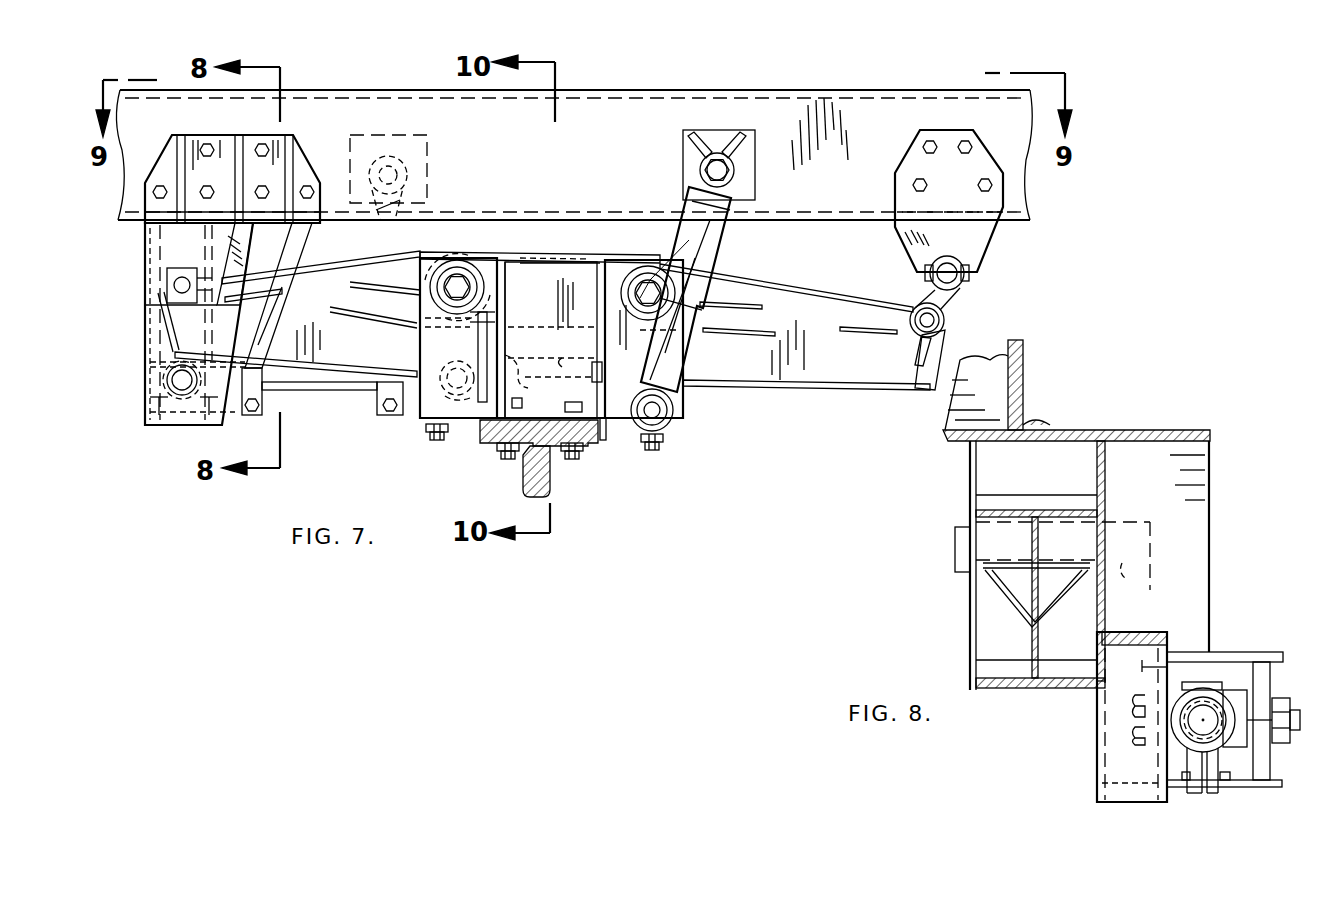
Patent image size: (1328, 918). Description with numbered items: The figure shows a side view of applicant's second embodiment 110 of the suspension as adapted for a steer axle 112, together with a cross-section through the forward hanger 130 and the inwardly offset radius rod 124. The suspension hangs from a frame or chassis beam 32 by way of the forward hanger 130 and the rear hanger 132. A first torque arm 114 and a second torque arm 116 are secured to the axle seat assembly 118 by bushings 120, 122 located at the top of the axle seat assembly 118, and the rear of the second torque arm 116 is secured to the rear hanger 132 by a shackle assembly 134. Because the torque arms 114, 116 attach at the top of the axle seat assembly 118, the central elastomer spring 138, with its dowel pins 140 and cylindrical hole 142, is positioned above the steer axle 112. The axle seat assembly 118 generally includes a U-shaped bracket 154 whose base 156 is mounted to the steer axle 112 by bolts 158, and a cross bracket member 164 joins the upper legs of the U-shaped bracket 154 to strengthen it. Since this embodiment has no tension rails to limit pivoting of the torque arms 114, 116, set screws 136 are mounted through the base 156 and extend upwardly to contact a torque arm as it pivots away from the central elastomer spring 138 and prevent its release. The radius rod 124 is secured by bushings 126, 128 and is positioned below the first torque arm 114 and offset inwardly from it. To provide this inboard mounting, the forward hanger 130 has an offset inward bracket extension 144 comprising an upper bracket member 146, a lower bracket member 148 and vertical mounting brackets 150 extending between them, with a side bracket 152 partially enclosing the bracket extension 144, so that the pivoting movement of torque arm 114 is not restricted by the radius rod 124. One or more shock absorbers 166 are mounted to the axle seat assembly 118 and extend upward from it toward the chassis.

In FIG. 7, the frame beam 32 is at (840, 100).
In FIG. 8, the frame beam 32 is at (1027, 363).
In FIG. 7, the second embodiment 110 is at (408, 478).
In FIG. 7, the steer axle 112 is at (555, 498).
In FIG. 7, the first torque arm 114 is at (328, 381).
In FIG. 7, the second torque arm 116 is at (822, 376).
In FIG. 7, the axle seat assembly 118 is at (592, 250).
In FIG. 7, the bushing 120 is at (462, 284).
In FIG. 7, the bushing 122 is at (715, 262).
In FIG. 7, the radius rod 124 is at (310, 398).
In FIG. 8, the radius rod 124 is at (988, 688).
In FIG. 7, the bushing 126 is at (189, 398).
In FIG. 8, the bushing 126 is at (1297, 708).
In FIG. 7, the bushing 128 is at (463, 437).
In FIG. 7, the forward hanger 130 is at (140, 350).
In FIG. 8, the forward hanger 130 is at (1212, 426).
In FIG. 7, the rear hanger 132 is at (1000, 246).
In FIG. 7, the shackle assembly 134 is at (945, 298).
In FIG. 7, the set screw 136 is at (430, 443).
In FIG. 7, the central elastomer spring 138 is at (530, 325).
In FIG. 7, the dowel pin 140 is at (582, 378).
In FIG. 7, the cylindrical hole 142 is at (558, 362).
In FIG. 7, the bracket extension 144 is at (140, 424).
In FIG. 8, the bracket extension 144 is at (1245, 645).
In FIG. 8, the upper bracket member 146 is at (1283, 652).
In FIG. 8, the lower bracket member 148 is at (1265, 790).
In FIG. 8, the vertical mounting bracket 150 is at (1143, 767).
In FIG. 7, the side bracket 152 is at (233, 420).
In FIG. 8, the side bracket 152 is at (1152, 796).
In FIG. 7, the U-shaped bracket 154 is at (680, 406).
In FIG. 7, the base 156 is at (620, 443).
In FIG. 7, the bolt 158 is at (517, 478).
In FIG. 7, the cross bracket member 164 is at (560, 255).
In FIG. 7, the shock absorber 166 is at (390, 230).